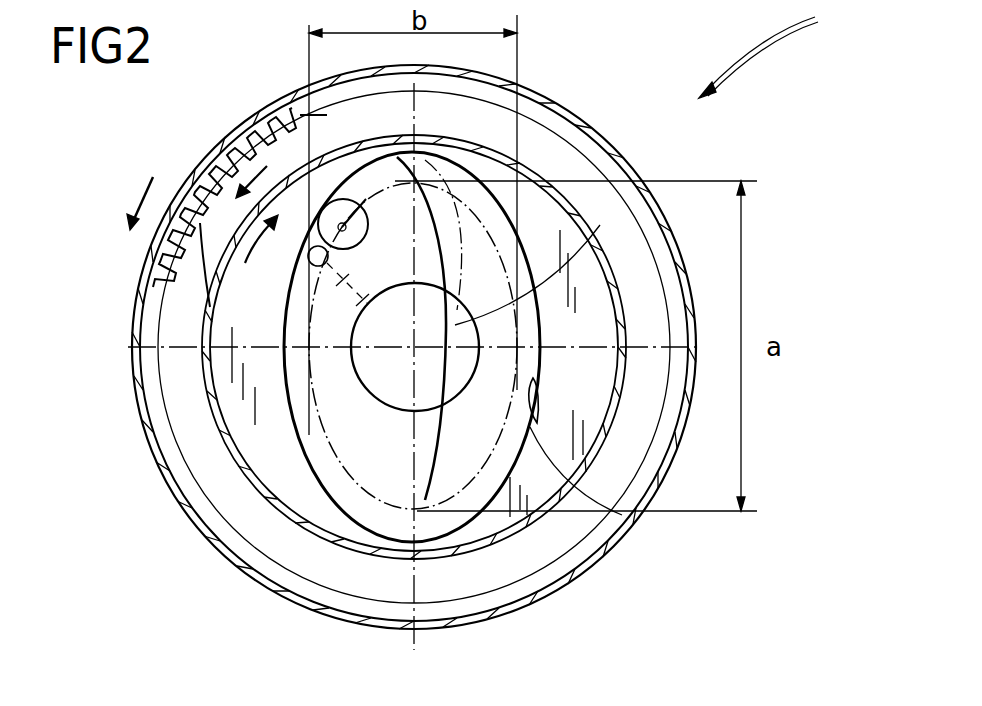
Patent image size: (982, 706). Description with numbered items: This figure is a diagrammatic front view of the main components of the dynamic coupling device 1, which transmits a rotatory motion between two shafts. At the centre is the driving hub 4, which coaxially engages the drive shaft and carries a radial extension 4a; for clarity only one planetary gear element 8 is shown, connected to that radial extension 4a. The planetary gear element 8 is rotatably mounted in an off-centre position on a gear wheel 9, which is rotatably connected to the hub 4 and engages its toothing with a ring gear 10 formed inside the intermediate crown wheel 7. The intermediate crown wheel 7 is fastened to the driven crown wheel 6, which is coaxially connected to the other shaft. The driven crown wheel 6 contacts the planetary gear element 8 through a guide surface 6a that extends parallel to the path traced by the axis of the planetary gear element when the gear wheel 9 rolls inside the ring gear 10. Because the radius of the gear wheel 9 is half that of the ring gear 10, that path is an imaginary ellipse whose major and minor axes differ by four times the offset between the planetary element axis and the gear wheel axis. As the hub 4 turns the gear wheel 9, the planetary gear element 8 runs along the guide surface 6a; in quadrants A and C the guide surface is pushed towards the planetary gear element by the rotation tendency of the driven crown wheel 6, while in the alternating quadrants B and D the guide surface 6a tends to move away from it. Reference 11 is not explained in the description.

The dynamic coupling device 1 is at (771, 49).
The driving hub 4 is at (498, 300).
The radial extension 4a is at (313, 341).
The driven crown wheel 6 is at (258, 420).
The guide surface 6a is at (540, 398).
The intermediate crown wheel 7 is at (242, 556).
The planetary gear element 8 is at (312, 252).
The gear wheel 9 is at (288, 158).
The ring gear 10 is at (210, 158).
The guide surface 11 is at (490, 467).
The quadrant A is at (316, 370).
The quadrant B is at (523, 330).
The quadrant C is at (447, 468).
The quadrant D is at (367, 440).